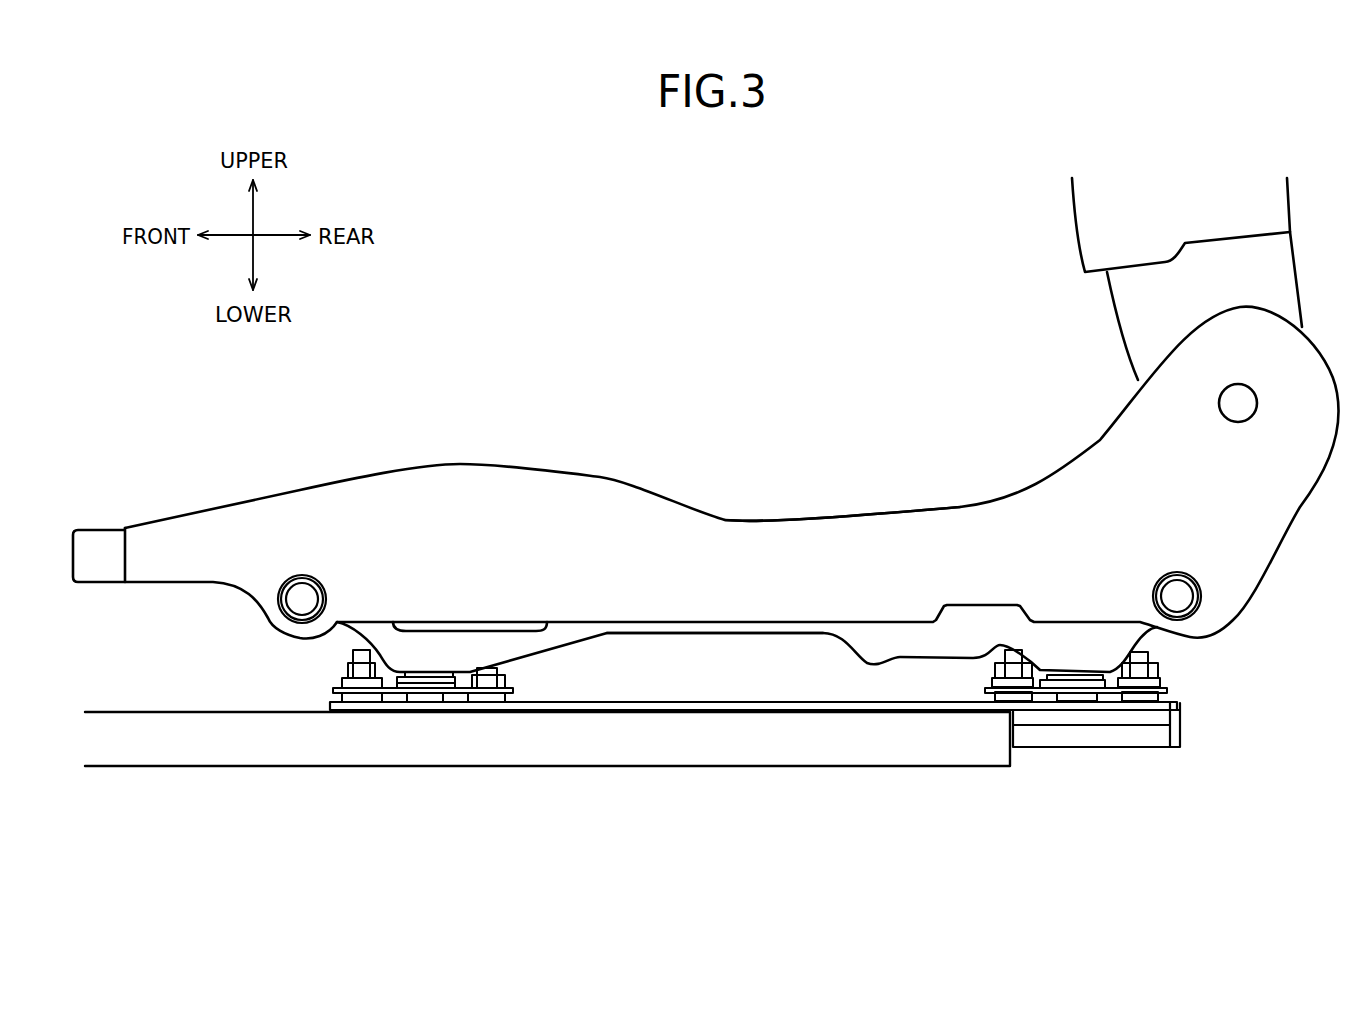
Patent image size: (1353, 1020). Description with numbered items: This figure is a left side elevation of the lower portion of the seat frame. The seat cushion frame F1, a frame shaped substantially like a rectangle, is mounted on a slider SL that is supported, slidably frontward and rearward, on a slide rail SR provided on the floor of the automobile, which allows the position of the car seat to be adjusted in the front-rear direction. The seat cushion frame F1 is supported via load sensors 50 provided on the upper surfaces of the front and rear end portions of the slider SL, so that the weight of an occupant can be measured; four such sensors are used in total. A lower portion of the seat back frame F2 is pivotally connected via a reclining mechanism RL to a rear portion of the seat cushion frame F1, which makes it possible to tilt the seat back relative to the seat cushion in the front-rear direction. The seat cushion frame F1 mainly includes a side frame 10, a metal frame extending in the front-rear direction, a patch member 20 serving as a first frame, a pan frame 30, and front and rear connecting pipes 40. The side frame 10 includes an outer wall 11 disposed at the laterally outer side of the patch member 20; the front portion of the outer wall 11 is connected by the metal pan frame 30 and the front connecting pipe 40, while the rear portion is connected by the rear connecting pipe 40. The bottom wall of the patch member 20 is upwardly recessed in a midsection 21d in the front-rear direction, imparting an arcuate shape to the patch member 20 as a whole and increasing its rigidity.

The side frame 10 is at (608, 467).
The outer wall 11 is at (788, 540).
The patch member 20 is at (563, 662).
The midsection of the bottom wall 21d is at (730, 633).
The pan frame 30 is at (92, 530).
The connecting pipe 40 is at (280, 604).
The load sensor 50 is at (320, 695).
The seat cushion frame F1 is at (465, 407).
The seat back frame F2 is at (1010, 208).
The reclining mechanism RL is at (1226, 388).
The slide rail SR is at (912, 750).
The slider SL is at (1118, 737).